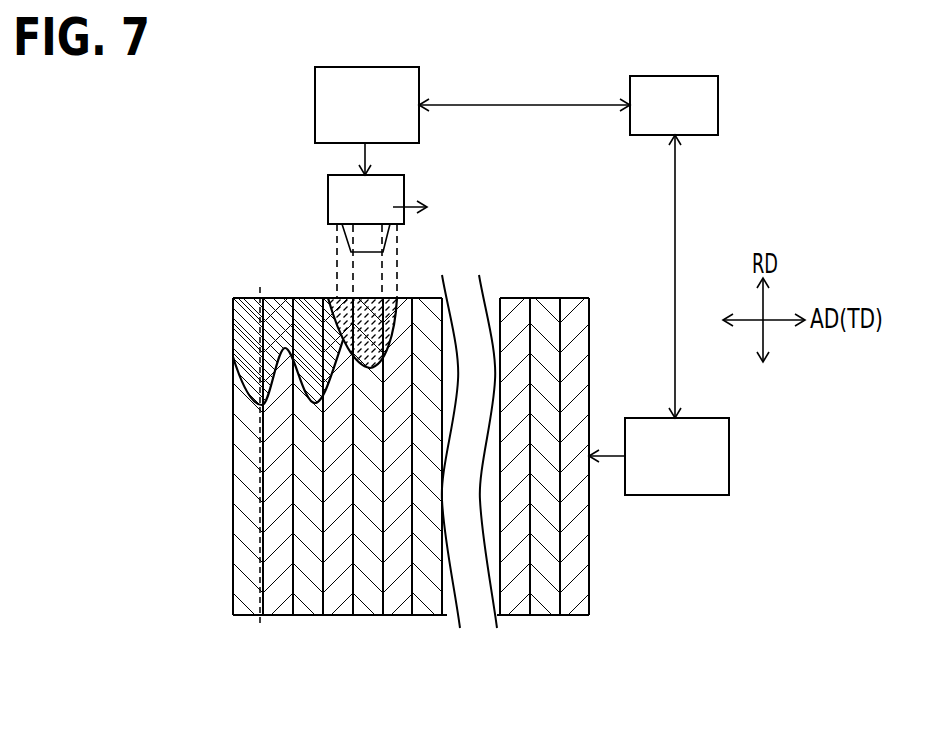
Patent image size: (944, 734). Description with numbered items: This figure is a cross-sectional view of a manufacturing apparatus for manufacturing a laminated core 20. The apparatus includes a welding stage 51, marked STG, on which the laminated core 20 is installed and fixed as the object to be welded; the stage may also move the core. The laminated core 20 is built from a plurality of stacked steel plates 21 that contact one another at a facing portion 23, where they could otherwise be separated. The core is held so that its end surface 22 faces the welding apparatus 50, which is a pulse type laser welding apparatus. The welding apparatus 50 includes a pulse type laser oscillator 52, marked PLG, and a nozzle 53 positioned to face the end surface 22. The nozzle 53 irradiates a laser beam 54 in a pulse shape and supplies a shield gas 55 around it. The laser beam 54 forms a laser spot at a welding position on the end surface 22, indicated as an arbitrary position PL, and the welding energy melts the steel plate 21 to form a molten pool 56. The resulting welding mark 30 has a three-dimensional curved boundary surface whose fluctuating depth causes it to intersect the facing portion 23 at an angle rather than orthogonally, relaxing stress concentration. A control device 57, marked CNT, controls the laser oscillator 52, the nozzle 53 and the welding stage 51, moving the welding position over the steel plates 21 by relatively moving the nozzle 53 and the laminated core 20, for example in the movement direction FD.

The laminated core 20 is at (382, 432).
The steel plate 21 is at (587, 585).
The end surface 22 is at (580, 298).
The facing portion 23 is at (555, 523).
The welding mark 30 is at (240, 298).
The welding apparatus 50 is at (491, 276).
The welding stage 51 is at (729, 435).
The laser oscillator 52 is at (315, 76).
The nozzle 53 is at (404, 178).
The laser beam 54 is at (380, 273).
The shield gas 55 is at (335, 264).
The molten pool 56 is at (340, 298).
The control device 57 is at (718, 95).